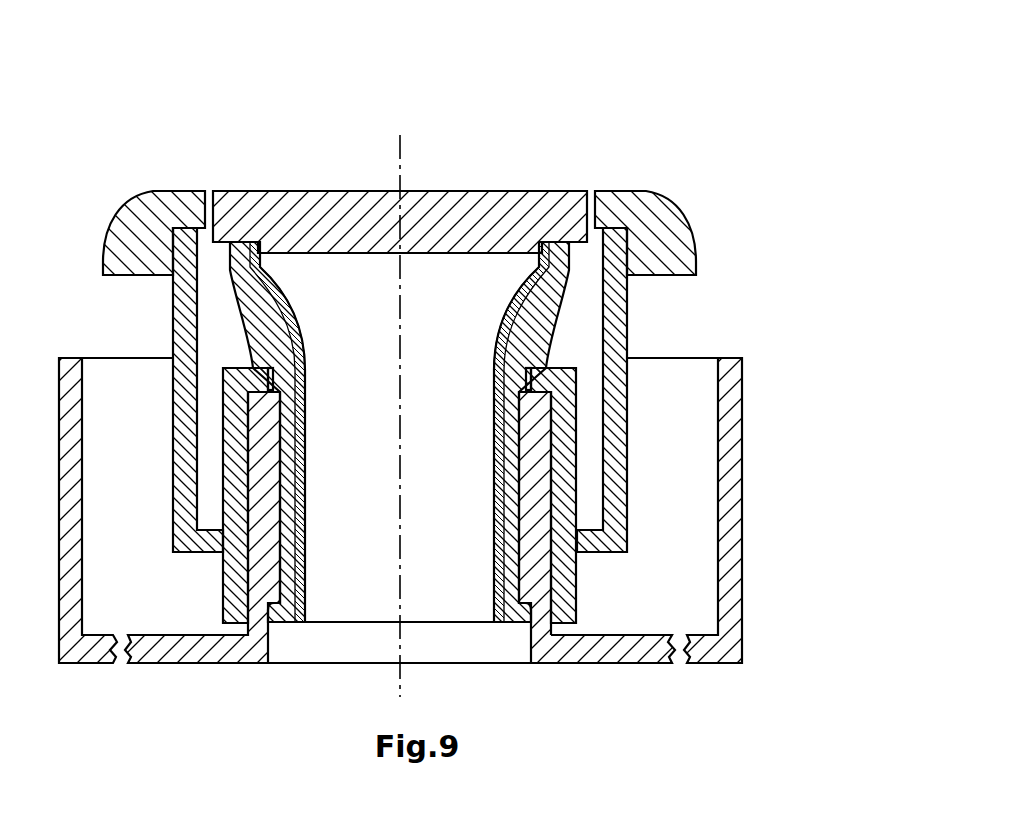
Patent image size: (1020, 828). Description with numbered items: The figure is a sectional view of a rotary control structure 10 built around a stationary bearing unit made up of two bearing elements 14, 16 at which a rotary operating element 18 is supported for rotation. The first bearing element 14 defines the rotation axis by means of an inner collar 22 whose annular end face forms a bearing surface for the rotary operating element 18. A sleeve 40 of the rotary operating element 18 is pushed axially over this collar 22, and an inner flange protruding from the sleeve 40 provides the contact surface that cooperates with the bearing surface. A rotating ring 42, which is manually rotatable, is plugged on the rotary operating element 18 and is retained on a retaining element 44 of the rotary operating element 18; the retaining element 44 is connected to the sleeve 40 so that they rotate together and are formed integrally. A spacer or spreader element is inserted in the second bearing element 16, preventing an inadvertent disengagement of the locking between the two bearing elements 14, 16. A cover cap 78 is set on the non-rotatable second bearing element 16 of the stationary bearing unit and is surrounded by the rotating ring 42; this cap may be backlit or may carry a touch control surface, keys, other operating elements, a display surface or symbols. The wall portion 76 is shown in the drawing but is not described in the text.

The rotary control structure 10 is at (460, 371).
The first bearing element 14 is at (400, 545).
The second bearing element 16 is at (535, 318).
The rotary operating element 18 is at (482, 315).
The collar 22 is at (535, 543).
The sleeve 40 is at (563, 498).
The rotating ring 42 is at (660, 230).
The retaining element 44 is at (617, 305).
The inner wall lower portion 76 is at (497, 430).
The cover cap 78 is at (313, 215).